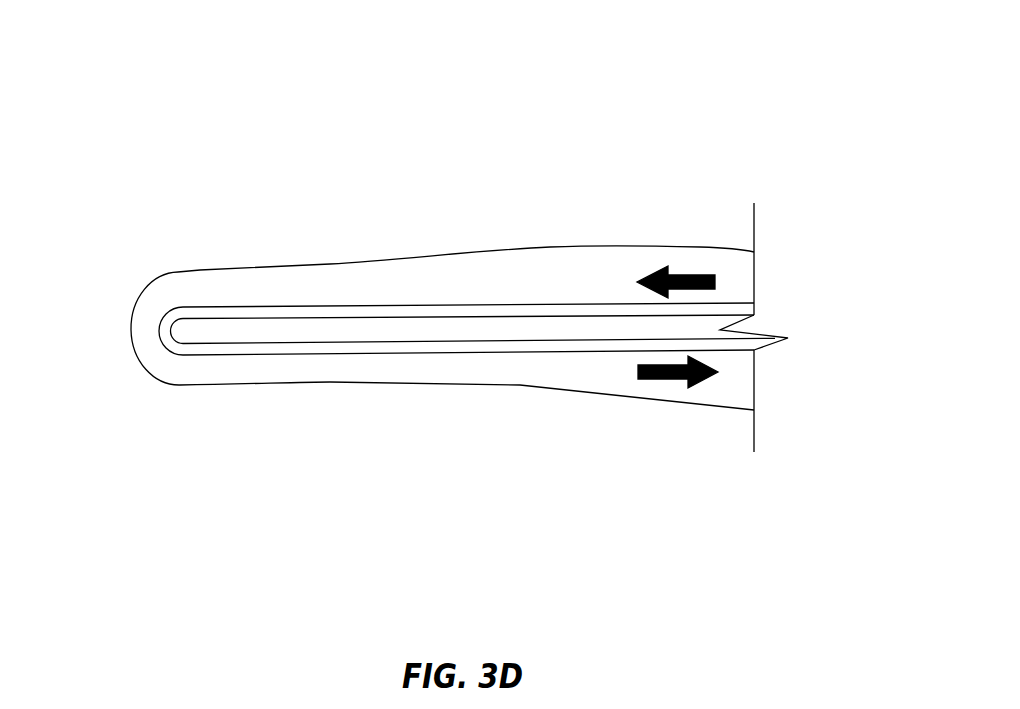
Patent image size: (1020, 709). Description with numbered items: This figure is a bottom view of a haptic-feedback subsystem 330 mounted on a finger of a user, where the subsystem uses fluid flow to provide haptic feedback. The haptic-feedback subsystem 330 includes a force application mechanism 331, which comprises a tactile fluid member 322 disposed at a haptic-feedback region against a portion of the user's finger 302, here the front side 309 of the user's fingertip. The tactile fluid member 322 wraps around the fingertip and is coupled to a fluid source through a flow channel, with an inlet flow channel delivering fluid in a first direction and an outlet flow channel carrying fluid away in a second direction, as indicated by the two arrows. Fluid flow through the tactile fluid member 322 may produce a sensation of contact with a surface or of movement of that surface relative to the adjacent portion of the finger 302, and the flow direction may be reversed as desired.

The haptic-feedback subsystem 330 is at (74, 78).
The force application mechanism 331 is at (732, 143).
The user's finger 302 is at (261, 266).
The front side of the user's fingertip 309 is at (188, 288).
The tactile fluid member 322 is at (310, 390).